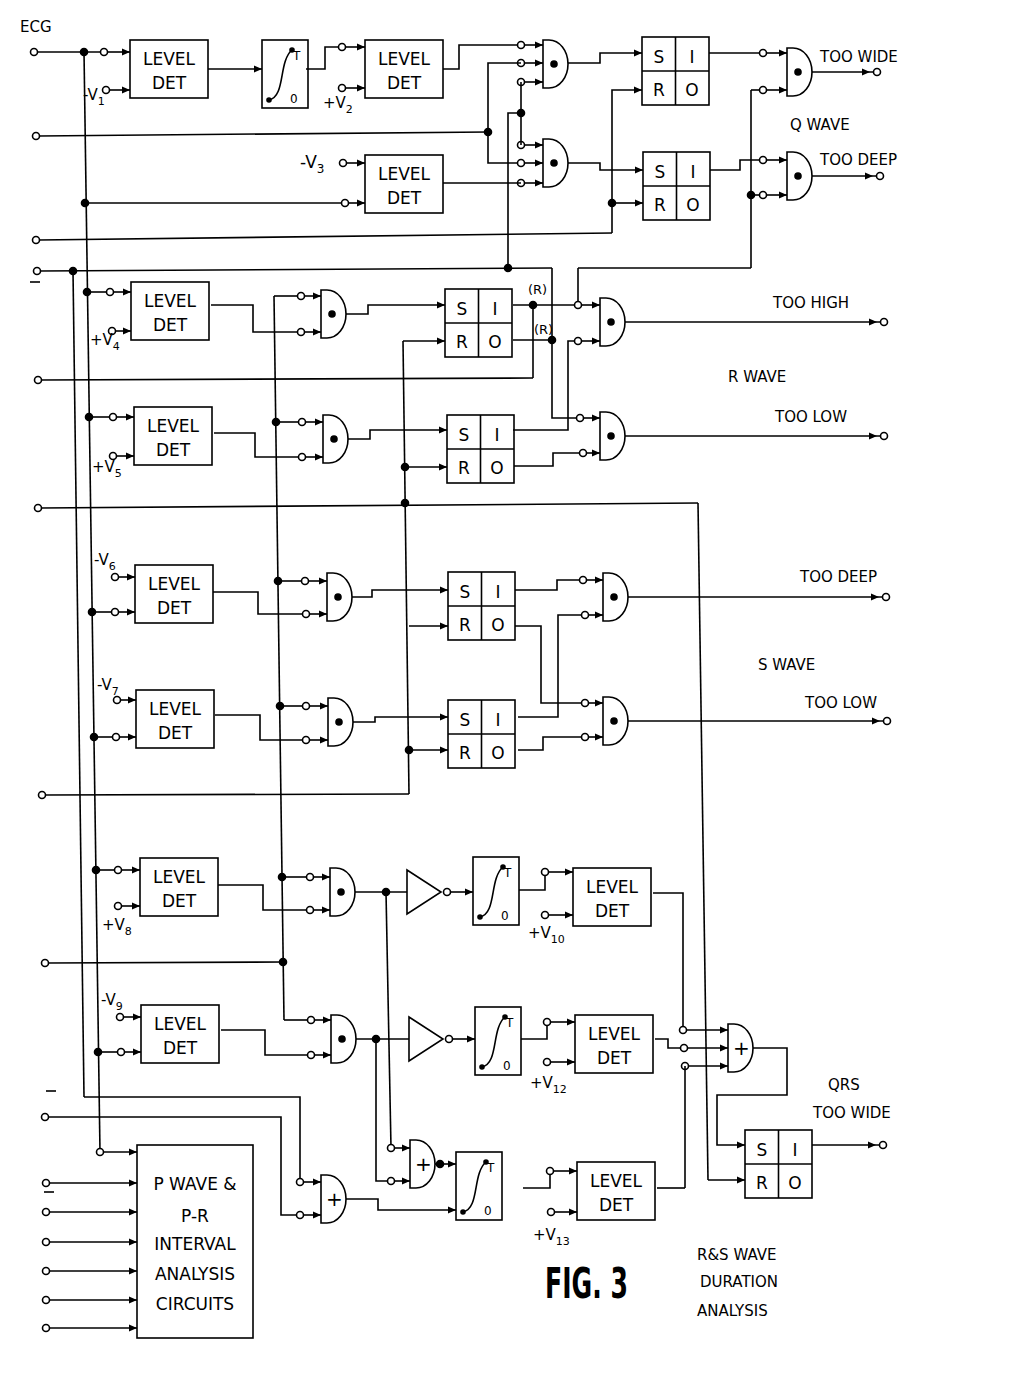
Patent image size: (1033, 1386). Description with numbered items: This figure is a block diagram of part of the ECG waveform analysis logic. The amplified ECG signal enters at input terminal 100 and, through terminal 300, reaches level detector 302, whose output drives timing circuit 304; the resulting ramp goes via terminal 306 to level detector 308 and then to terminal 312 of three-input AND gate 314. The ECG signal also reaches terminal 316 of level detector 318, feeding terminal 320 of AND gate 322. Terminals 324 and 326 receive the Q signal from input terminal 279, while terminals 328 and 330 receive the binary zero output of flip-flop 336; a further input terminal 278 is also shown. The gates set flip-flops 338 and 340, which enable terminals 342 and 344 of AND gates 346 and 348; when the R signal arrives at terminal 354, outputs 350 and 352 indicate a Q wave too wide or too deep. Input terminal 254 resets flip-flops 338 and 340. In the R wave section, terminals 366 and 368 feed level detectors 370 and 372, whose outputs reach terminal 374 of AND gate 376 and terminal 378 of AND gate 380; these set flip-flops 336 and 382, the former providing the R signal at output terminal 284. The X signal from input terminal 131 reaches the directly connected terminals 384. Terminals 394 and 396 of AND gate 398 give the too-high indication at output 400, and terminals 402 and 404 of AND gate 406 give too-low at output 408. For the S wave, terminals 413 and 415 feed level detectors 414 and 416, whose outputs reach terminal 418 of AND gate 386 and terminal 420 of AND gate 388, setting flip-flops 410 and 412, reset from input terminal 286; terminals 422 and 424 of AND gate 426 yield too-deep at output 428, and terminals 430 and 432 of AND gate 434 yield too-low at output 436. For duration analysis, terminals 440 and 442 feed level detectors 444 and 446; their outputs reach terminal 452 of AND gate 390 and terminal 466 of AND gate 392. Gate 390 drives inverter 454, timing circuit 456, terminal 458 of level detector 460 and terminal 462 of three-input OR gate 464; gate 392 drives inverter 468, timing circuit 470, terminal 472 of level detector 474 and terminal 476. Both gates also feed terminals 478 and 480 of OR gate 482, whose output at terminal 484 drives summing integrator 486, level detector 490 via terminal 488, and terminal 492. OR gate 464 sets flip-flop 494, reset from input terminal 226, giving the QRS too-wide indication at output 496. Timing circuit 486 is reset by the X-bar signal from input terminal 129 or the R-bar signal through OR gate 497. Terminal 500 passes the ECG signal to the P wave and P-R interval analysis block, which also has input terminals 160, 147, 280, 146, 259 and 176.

The input terminal 100 is at (38, 57).
The uppermost input terminal 300 is at (104, 48).
The level detector 302 is at (200, 42).
The timing circuit 304 is at (288, 40).
The uppermost input terminal 306 is at (342, 43).
The level detector 308 is at (400, 40).
The input terminal 312 is at (534, 30).
The three-input AND gate 314 is at (560, 40).
The lowermost input terminal 316 is at (343, 207).
The level detector 318 is at (437, 213).
The input terminal 320 is at (521, 187).
The three-input AND gate 322 is at (560, 187).
The input terminal 324 is at (500, 45).
The input terminal 326 is at (488, 163).
The third input terminal 328 is at (524, 86).
The third input terminal 330 is at (526, 142).
The flip-flop 336 is at (447, 290).
The flip-flop 338 is at (690, 37).
The flip-flop 340 is at (690, 152).
The input terminal 342 is at (778, 34).
The input terminal 344 is at (776, 144).
The two-input AND gate 346 is at (805, 48).
The two-input AND gate 348 is at (805, 200).
The output terminal 350 is at (876, 76).
The output terminal 352 is at (879, 180).
The input terminal 354 is at (763, 86).
The input terminal 279 is at (36, 140).
The input terminal 254 is at (40, 237).
The R-bar signal input terminal 278 is at (36, 256).
The output terminal 284 is at (38, 384).
The input terminal 226 is at (38, 512).
The input terminal 286 is at (42, 799).
The input terminal 131 is at (45, 967).
The input terminal 129 is at (45, 1121).
The terminal 500 is at (96, 1153).
The P signal input terminal 160 is at (52, 1180).
The P-bar signal input terminal 147 is at (50, 1208).
The o signal input terminal 280 is at (50, 1238).
The a signal input terminal 146 is at (50, 1267).
The V signal input terminal 259 is at (50, 1296).
The b signal input terminal 176 is at (50, 1324).
The uppermost input terminal 366 is at (110, 288).
The uppermost input terminal 368 is at (113, 413).
The level detector 370 is at (213, 303).
The level detector 372 is at (214, 430).
The input terminal 374 is at (300, 336).
The two-input AND gate 376 is at (350, 280).
The input terminal 378 is at (302, 461).
The two-input AND gate 380 is at (342, 415).
The flip-flop 382 is at (450, 414).
The input terminals 384 is at (300, 292).
The two-input AND gate 386 is at (346, 573).
The two-input AND gate 388 is at (347, 698).
The AND gate 390 is at (358, 858).
The AND gate 392 is at (360, 1004).
The input terminal 394 is at (578, 301).
The input terminal 396 is at (578, 345).
The two-input AND gate 398 is at (625, 305).
The output terminal 400 is at (884, 326).
The input terminal 402 is at (580, 414).
The input terminal 404 is at (582, 457).
The two-input AND gate 406 is at (625, 418).
The output terminal 408 is at (884, 440).
The flip-flop 410 is at (452, 572).
The flip-flop 412 is at (452, 700).
The input terminal 413 is at (114, 616).
The level detector 414 is at (216, 556).
The input terminal 415 is at (115, 741).
The level detector 416 is at (216, 682).
The input terminal 418 is at (305, 618).
The input terminal 420 is at (305, 744).
The input terminal 422 is at (583, 576).
The input terminal 424 is at (585, 619).
The two-input AND gate 426 is at (625, 578).
The output terminal 428 is at (886, 601).
The input terminal 430 is at (585, 699).
The input terminal 432 is at (584, 741).
The two-input AND gate 434 is at (622, 744).
The output terminal 436 is at (887, 725).
The uppermost input terminal 440 is at (118, 866).
The uppermost input terminal 442 is at (120, 1056).
The level detector 444 is at (206, 849).
The level detector 446 is at (221, 1060).
The input terminal 452 is at (309, 914).
The inverter 454 is at (428, 858).
The timing circuit 456 is at (506, 847).
The uppermost input terminal 458 is at (545, 868).
The level detector 460 is at (644, 858).
The input terminal 462 is at (681, 1026).
The three-input OR gate 464 is at (758, 1012).
The input terminal 466 is at (312, 1059).
The inverter 468 is at (436, 1006).
The timing circuit 470 is at (506, 997).
The uppermost input terminal 472 is at (547, 1018).
The level detector 474 is at (612, 1015).
The input terminal 476 is at (683, 1070).
The input terminal 478 is at (391, 1144).
The input terminal 480 is at (390, 1185).
The two-input OR gate 482 is at (432, 1140).
The uppermost input terminal 484 is at (432, 1186).
The summing integrator 486 is at (490, 1152).
The uppermost input terminal 488 is at (550, 1167).
The level detector 490 is at (644, 1152).
The third input terminal 492 is at (685, 1100).
The flip-flop 494 is at (792, 1120).
The output terminal 496 is at (883, 1149).
The two-input OR gate 497 is at (334, 1160).